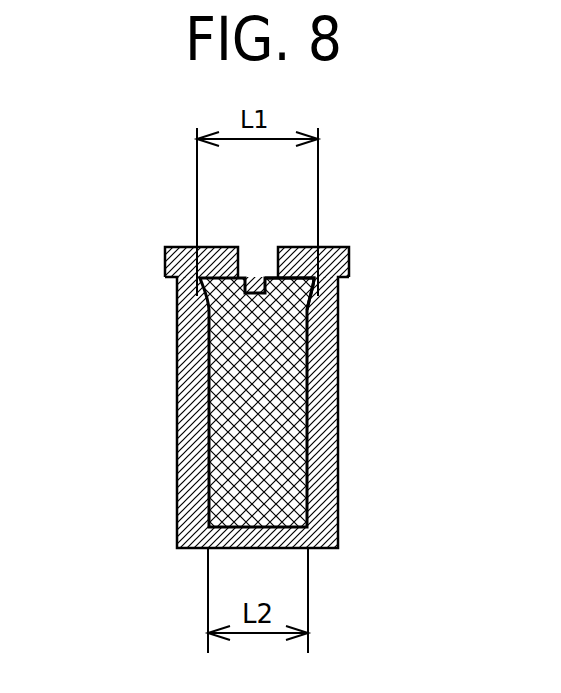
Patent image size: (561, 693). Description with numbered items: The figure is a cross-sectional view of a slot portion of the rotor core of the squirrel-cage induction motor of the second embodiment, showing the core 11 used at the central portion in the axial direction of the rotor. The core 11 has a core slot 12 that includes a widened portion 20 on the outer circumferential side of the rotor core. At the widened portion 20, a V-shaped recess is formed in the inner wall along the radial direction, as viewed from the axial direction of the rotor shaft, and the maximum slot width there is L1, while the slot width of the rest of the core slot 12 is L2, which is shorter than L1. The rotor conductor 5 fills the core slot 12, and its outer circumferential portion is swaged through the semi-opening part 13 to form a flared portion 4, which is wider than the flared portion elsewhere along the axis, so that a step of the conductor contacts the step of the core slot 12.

The flared portion 4 is at (200, 293).
The rotor conductor 5 is at (232, 446).
The core 11 is at (292, 265).
The core slot 12 is at (308, 440).
The semi-opening part 13 is at (238, 262).
The widened portion 20 is at (313, 292).